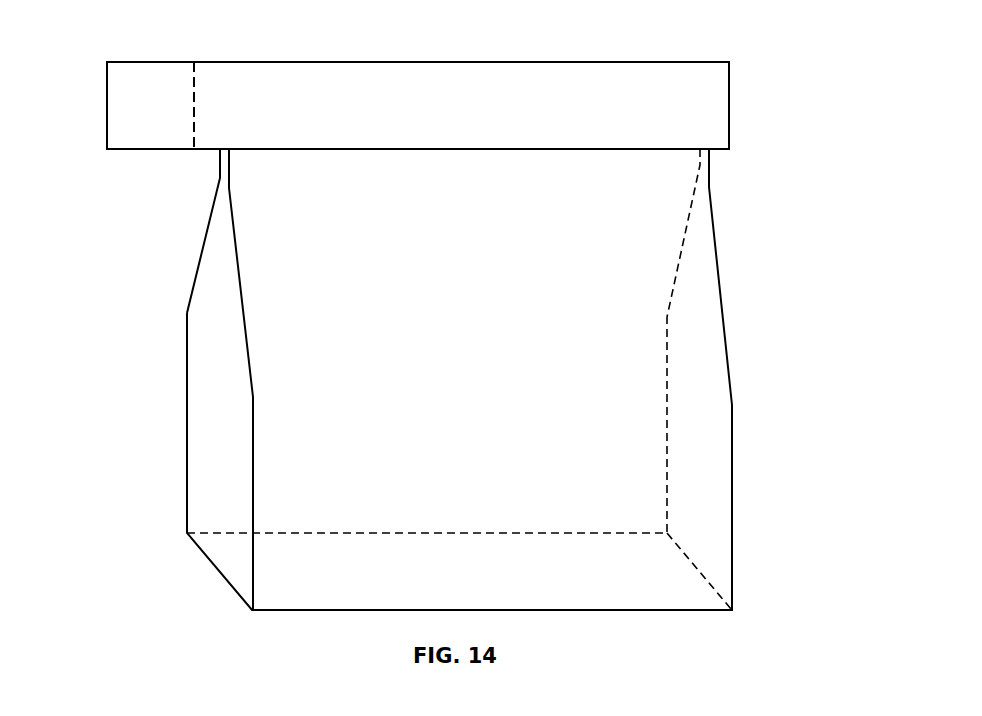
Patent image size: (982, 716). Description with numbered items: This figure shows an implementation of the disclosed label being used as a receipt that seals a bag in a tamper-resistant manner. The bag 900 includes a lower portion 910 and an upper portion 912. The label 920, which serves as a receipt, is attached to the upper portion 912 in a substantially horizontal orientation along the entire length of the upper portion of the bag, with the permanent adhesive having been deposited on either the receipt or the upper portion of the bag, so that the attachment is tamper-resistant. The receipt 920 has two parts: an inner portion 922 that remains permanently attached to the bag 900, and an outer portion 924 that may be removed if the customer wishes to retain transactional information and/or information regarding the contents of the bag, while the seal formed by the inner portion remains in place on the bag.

The bag 900 is at (536, 369).
The lower portion 910 is at (718, 477).
The upper portion 912 is at (710, 165).
The label 920 is at (693, 63).
The inner portion 922 is at (465, 121).
The outer portion 924 is at (138, 130).